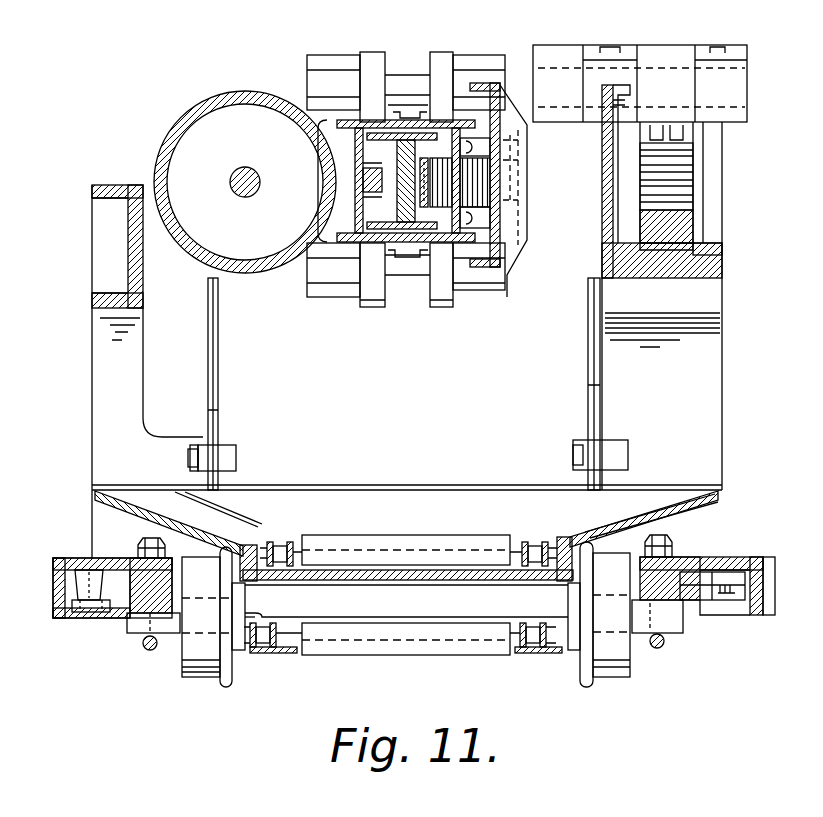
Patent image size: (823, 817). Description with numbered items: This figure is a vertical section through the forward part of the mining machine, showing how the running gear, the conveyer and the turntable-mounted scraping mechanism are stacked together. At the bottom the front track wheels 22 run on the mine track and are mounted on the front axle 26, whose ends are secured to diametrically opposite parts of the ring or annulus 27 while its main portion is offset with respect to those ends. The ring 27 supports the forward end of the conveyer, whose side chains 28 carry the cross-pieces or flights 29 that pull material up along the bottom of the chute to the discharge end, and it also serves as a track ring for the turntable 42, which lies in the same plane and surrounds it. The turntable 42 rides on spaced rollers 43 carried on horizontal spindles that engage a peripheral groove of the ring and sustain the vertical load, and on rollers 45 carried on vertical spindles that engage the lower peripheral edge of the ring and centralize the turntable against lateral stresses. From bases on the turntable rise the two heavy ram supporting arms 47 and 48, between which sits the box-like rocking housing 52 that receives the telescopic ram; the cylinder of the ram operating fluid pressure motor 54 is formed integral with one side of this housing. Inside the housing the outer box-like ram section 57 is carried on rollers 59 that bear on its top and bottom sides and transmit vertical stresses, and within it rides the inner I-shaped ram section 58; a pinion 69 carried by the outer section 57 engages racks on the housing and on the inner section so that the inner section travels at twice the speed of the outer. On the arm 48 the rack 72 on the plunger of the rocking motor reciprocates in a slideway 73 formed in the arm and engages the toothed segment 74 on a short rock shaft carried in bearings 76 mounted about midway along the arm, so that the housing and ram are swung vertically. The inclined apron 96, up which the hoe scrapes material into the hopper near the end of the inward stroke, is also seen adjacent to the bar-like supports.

The front track wheels 22 is at (186, 660).
The front axle 26 is at (406, 601).
The ring or annulus 27 is at (140, 550).
The side chains 28 is at (283, 545).
The cross-pieces or flights 29 is at (373, 542).
The turntable 42 is at (53, 565).
The rollers 43 is at (693, 612).
The rollers 45 is at (83, 620).
The ram supporting arm 47 is at (97, 398).
The ram supporting arm 48 is at (736, 378).
The housing 52 is at (524, 252).
The ram operating fluid pressure motor 54 is at (263, 272).
The outer box-like ram section 57 is at (357, 157).
The inner I-shaped ram section 58 is at (362, 206).
The rollers 59 is at (425, 308).
The pinion 69 is at (467, 181).
The rack 72 is at (672, 233).
The slideway 73 is at (690, 278).
The toothed segment 74 is at (688, 177).
The bearings 76 is at (597, 44).
The inclined apron 96 is at (218, 403).